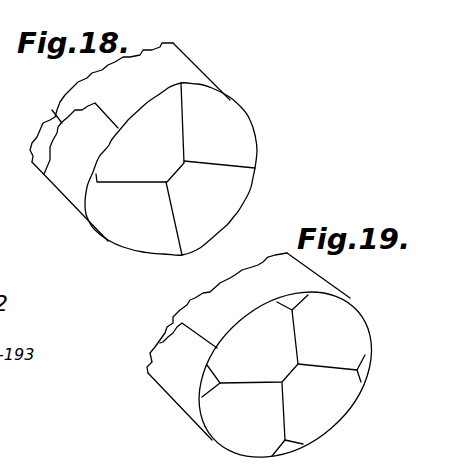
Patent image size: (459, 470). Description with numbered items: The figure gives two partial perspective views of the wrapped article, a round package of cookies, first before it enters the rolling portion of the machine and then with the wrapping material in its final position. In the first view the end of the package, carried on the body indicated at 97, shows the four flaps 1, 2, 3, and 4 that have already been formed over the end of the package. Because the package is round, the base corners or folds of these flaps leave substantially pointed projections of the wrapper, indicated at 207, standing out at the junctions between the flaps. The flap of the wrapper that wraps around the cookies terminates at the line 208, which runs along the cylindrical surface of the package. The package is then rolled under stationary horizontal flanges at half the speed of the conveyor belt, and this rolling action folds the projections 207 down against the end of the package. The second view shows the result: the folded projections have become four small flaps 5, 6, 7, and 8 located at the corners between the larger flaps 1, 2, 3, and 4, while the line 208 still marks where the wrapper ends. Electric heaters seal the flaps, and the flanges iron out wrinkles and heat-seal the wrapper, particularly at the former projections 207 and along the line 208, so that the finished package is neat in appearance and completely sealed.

In FIG. 18, the flap 1 is at (144, 169).
In FIG. 19, the flap 1 is at (276, 364).
In FIG. 18, the flap 2 is at (219, 143).
In FIG. 19, the flap 2 is at (327, 347).
In FIG. 18, the flap 3 is at (187, 218).
In FIG. 19, the flap 3 is at (302, 411).
In FIG. 18, the flap 4 is at (140, 132).
In FIG. 19, the flap 4 is at (259, 346).
In FIG. 19, the flap 5 is at (292, 302).
In FIG. 19, the flap 6 is at (211, 381).
In FIG. 19, the flap 7 is at (287, 448).
In FIG. 19, the flap 8 is at (361, 368).
In FIG. 18, the roller body 97 is at (153, 53).
In FIG. 19, the roller body 97 is at (247, 275).
In FIG. 18, the pointed projections of the wrapper 207 is at (181, 83).
In FIG. 18, the line 208 is at (110, 117).
In FIG. 19, the line 208 is at (200, 337).